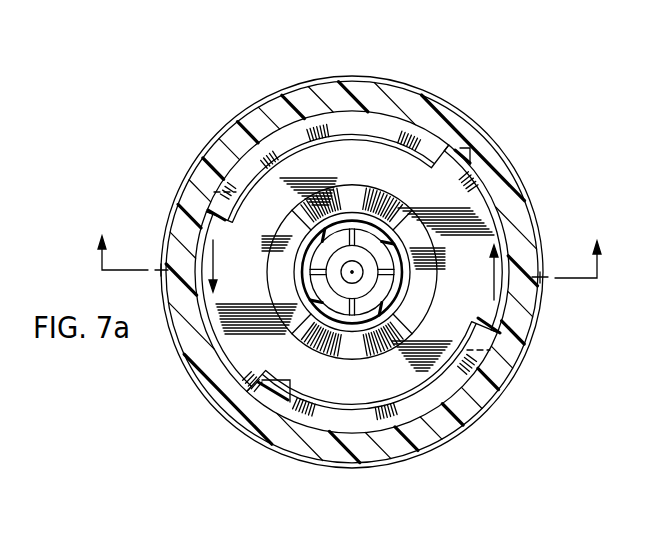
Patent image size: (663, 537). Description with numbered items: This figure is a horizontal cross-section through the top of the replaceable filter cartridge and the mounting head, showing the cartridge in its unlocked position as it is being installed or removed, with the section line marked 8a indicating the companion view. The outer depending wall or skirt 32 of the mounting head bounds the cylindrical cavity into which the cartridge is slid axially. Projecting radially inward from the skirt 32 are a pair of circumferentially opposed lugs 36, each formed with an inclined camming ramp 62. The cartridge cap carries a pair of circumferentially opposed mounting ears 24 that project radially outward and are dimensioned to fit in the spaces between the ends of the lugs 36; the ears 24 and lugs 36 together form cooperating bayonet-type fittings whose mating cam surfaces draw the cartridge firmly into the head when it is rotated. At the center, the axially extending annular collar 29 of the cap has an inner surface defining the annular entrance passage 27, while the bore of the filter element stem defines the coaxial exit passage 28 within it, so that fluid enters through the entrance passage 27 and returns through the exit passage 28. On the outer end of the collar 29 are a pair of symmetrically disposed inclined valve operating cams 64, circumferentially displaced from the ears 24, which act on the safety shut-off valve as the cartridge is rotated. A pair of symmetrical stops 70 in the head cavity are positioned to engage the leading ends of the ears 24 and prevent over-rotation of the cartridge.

The mounting ears 24 is at (478, 197).
The entrance passage 27 is at (355, 218).
The exit passage 28 is at (346, 278).
The annular collar 29 is at (422, 243).
The outer depending wall or skirt 32 is at (507, 382).
The lugs 36 is at (383, 120).
The inclined camming ramps 62 is at (458, 152).
The valve operating cams 64 is at (307, 207).
The stops 70 is at (245, 160).
The section line 8a is at (349, 247).